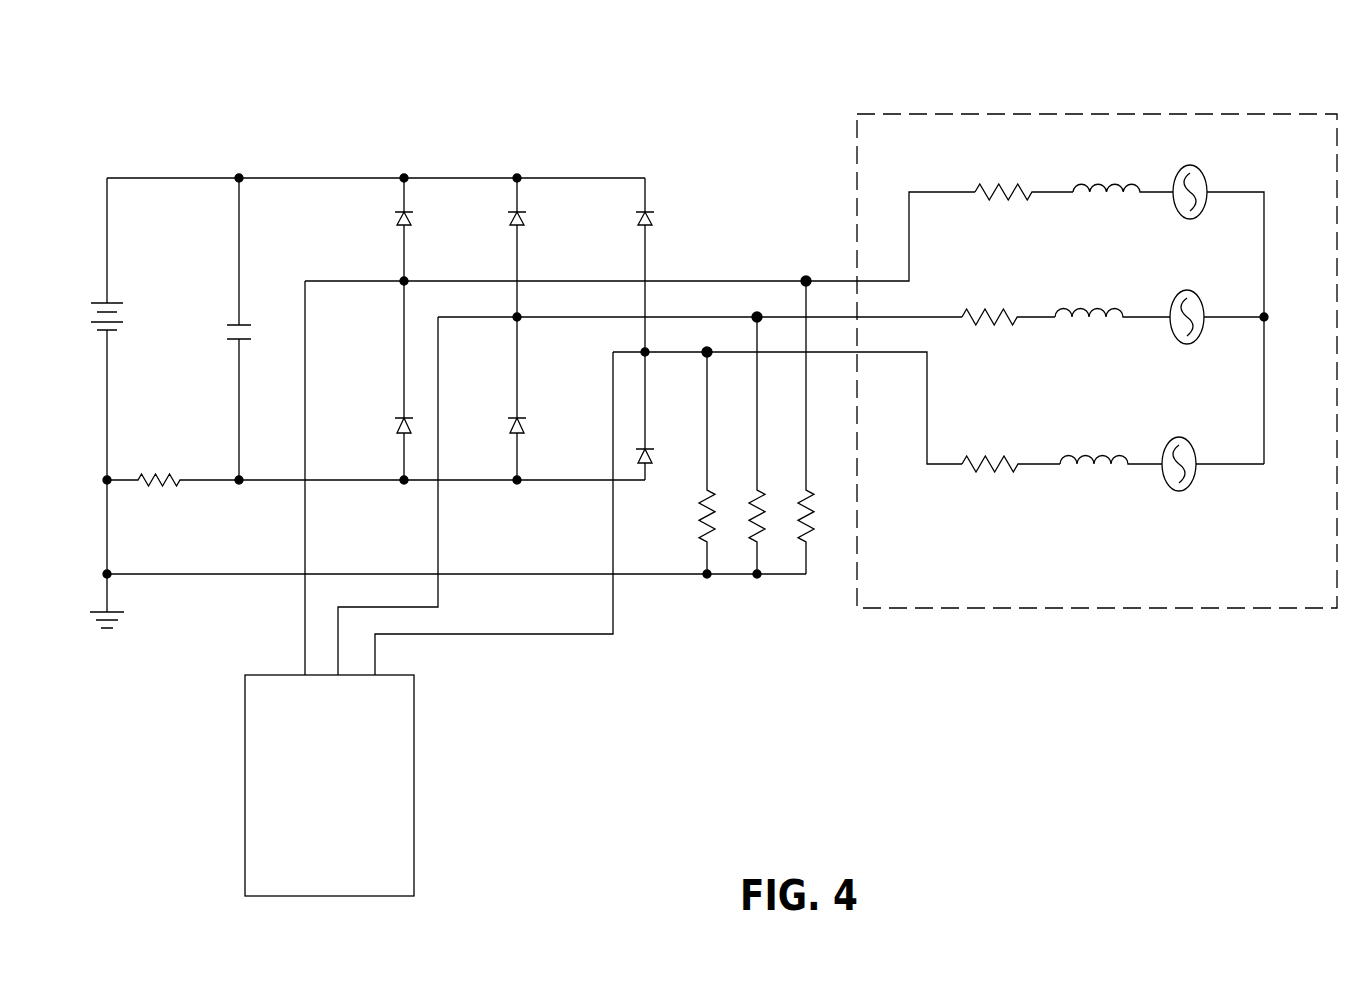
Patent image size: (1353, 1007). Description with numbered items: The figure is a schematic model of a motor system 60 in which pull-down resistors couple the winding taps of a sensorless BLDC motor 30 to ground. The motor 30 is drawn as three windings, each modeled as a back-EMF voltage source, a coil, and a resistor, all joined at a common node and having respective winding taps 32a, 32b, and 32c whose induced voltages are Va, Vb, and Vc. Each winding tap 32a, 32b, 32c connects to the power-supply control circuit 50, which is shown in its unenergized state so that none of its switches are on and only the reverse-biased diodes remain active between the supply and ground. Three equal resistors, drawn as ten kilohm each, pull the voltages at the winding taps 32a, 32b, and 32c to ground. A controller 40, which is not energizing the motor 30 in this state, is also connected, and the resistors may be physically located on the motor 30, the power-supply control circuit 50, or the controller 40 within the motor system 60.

The motor system 60 is at (181, 91).
The power-supply control circuit 50 is at (398, 138).
The sensorless BLDC motor 30 is at (1076, 83).
The controller 40 is at (245, 800).
The winding tap 32a is at (806, 282).
The winding tap 32b is at (757, 317).
The winding tap 32c is at (707, 352).